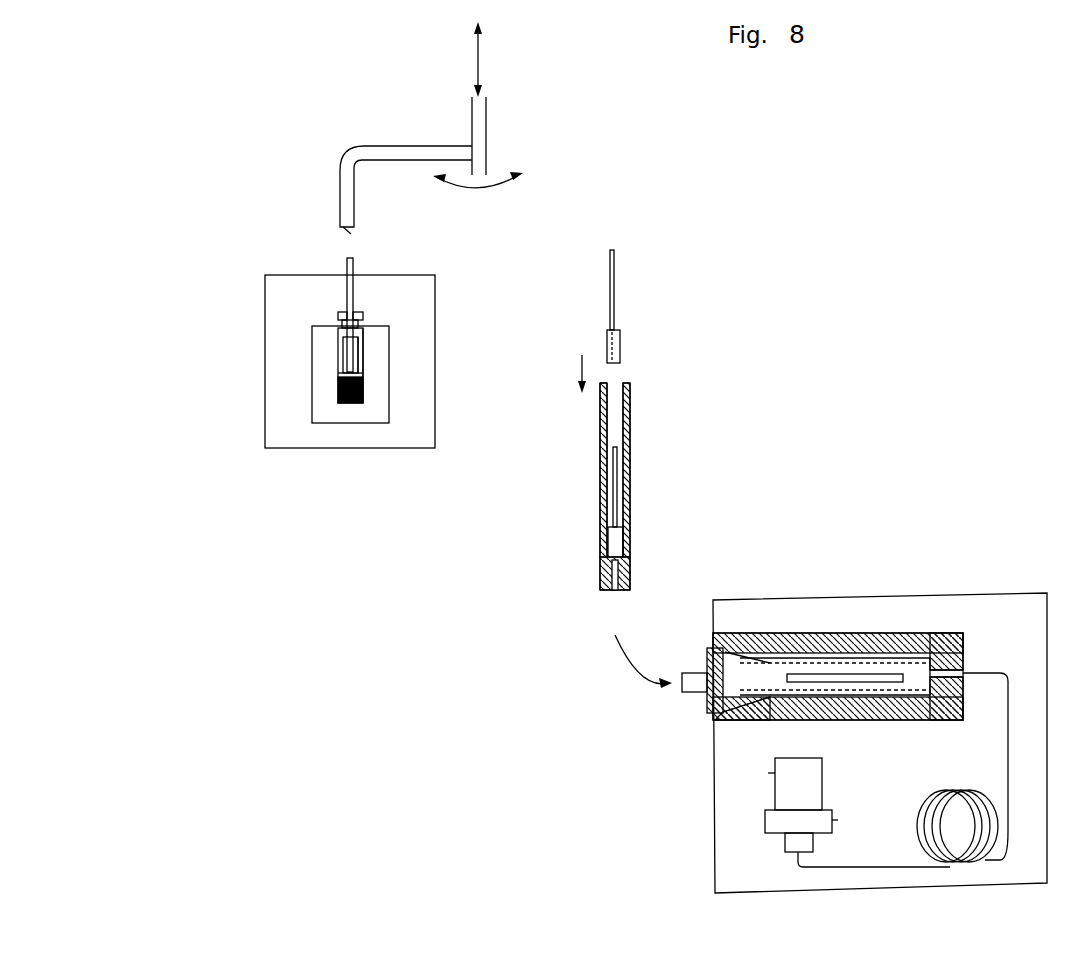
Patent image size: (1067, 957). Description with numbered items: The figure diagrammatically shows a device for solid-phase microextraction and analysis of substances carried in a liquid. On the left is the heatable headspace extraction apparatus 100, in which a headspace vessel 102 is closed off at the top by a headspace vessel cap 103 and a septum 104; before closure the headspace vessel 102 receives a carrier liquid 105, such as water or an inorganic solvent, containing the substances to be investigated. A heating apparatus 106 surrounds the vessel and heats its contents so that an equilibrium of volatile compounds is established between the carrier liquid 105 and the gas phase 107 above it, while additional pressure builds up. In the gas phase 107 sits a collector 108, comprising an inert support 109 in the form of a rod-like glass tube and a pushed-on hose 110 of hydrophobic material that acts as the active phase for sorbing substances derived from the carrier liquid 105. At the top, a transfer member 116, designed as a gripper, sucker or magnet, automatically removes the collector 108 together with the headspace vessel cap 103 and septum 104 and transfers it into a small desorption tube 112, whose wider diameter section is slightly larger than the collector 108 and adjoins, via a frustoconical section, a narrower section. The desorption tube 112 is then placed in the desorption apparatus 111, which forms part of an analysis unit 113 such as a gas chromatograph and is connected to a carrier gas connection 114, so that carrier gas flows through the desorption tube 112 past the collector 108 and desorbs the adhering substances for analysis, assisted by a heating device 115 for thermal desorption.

The headspace extraction apparatus 100 is at (250, 462).
The headspace vessel 102 is at (363, 372).
The headspace vessel cap 103 is at (347, 314).
The septum 104 is at (363, 317).
The carrier liquid 105 is at (365, 393).
The heating apparatus 106 is at (375, 413).
The gas phase 107 is at (340, 330).
The collector 108 is at (343, 360).
The inert support 109 is at (343, 373).
The hose 110 is at (360, 350).
The desorption apparatus 111 is at (758, 640).
The desorption tube 112 is at (627, 415).
The analysis unit 113 is at (713, 777).
The carrier gas connection 114 is at (723, 640).
The heating device 115 is at (798, 640).
The transfer member 116 is at (440, 155).